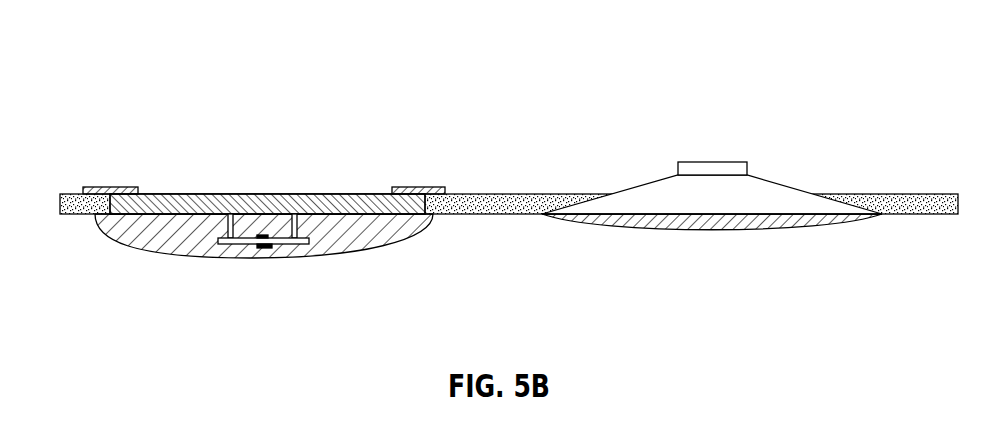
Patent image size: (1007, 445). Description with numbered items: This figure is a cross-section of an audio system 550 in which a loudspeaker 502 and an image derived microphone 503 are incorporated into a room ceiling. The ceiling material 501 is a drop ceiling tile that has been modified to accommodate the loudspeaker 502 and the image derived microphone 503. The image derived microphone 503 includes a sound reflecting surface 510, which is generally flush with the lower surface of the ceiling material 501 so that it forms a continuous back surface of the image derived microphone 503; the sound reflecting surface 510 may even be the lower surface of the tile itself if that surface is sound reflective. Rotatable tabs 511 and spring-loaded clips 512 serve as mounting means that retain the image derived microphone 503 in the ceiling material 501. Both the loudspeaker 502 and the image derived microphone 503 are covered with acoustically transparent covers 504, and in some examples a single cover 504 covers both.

The light emitting arrangement 550 is at (126, 53).
The ceiling material 501 is at (535, 194).
The loudspeaker 502 is at (755, 103).
The image derived microphone 503 is at (260, 257).
The acoustically transparent cover 504 is at (418, 239).
The sound reflecting surface 510 is at (165, 240).
The rotatable tabs 511 is at (97, 186).
The spring-loaded clips 512 is at (415, 187).